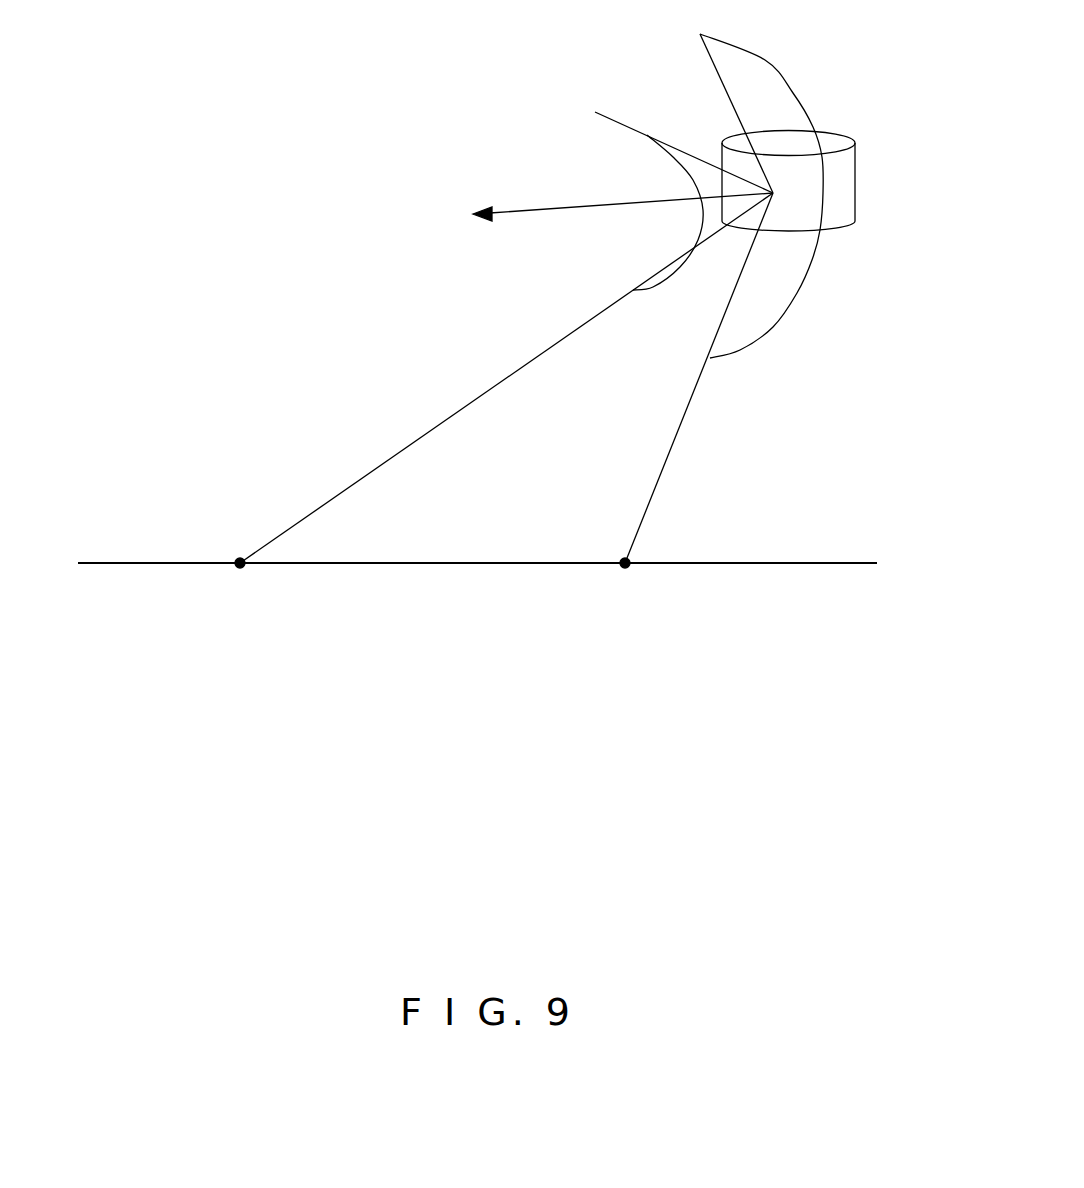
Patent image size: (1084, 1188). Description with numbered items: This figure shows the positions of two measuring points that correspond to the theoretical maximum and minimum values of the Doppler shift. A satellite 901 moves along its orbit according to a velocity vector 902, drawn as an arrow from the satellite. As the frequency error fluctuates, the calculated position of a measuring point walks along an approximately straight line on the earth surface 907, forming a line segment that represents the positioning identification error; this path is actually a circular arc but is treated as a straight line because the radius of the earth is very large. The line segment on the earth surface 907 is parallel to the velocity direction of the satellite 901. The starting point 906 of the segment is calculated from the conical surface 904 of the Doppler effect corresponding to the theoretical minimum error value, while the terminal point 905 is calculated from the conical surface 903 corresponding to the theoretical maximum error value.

The satellite 901 is at (857, 180).
The velocity vector 902 is at (547, 208).
The conical surface 903 is at (492, 387).
The conical surface 904 is at (673, 448).
The terminal point 905 is at (240, 562).
The starting point 906 is at (623, 560).
The earth surface 907 is at (122, 563).